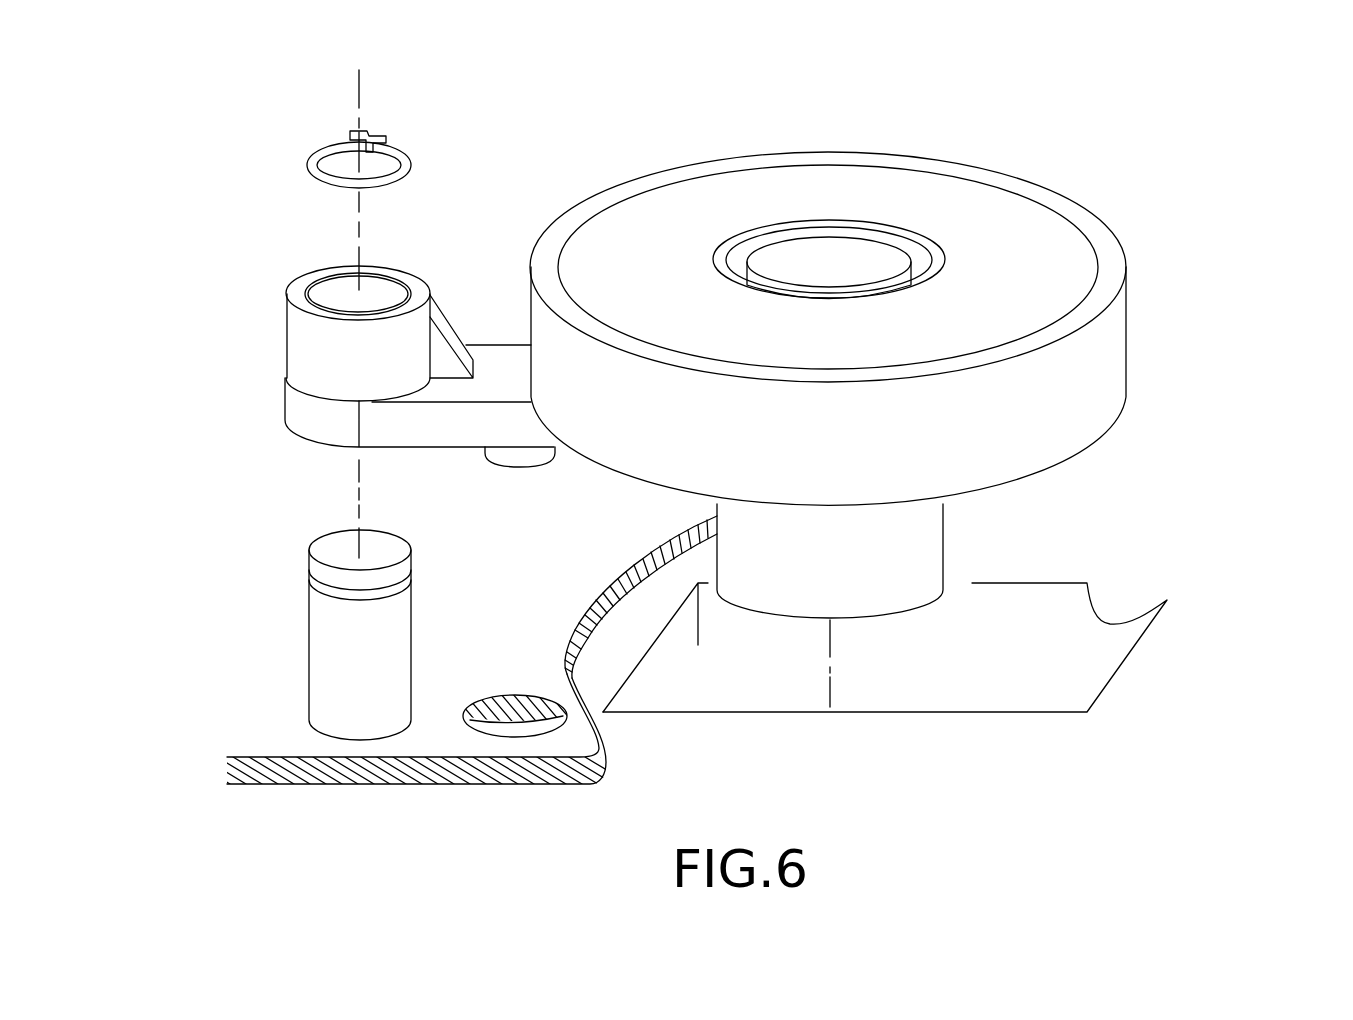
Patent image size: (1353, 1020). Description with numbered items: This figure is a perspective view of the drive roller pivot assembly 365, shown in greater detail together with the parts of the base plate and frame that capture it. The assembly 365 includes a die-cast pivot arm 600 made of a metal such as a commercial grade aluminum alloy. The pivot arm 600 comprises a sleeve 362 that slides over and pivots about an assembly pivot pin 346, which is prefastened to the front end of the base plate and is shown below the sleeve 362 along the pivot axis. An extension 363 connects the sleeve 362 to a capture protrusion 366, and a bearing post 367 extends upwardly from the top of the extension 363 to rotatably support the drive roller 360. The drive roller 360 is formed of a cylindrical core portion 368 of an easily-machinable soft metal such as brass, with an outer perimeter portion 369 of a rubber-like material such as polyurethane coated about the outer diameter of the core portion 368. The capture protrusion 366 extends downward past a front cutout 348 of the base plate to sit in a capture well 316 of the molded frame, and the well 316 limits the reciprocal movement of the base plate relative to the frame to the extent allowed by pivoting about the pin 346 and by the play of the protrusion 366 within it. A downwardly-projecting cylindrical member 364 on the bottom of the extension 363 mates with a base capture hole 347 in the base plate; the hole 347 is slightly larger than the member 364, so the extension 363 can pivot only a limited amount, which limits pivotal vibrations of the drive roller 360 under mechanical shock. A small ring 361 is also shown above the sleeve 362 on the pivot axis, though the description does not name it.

The drive roller 360 is at (931, 262).
The retaining ring 361 is at (306, 168).
The sleeve 362 is at (297, 331).
The extension 363 is at (410, 445).
The downwardly-projecting cylindrical member 364 is at (527, 460).
The drive roller pivot assembly 365 is at (1332, 366).
The capture protrusion 366 is at (923, 537).
The bearing post 367 is at (830, 263).
The cylindrical core portion 368 is at (1020, 218).
The outer perimeter portion 369 is at (1105, 243).
The pivot arm 600 is at (385, 399).
The assembly pivot pin 346 is at (328, 641).
The base capture hole 347 is at (520, 735).
The front cutout 348 is at (593, 667).
The capture well 316 is at (885, 647).